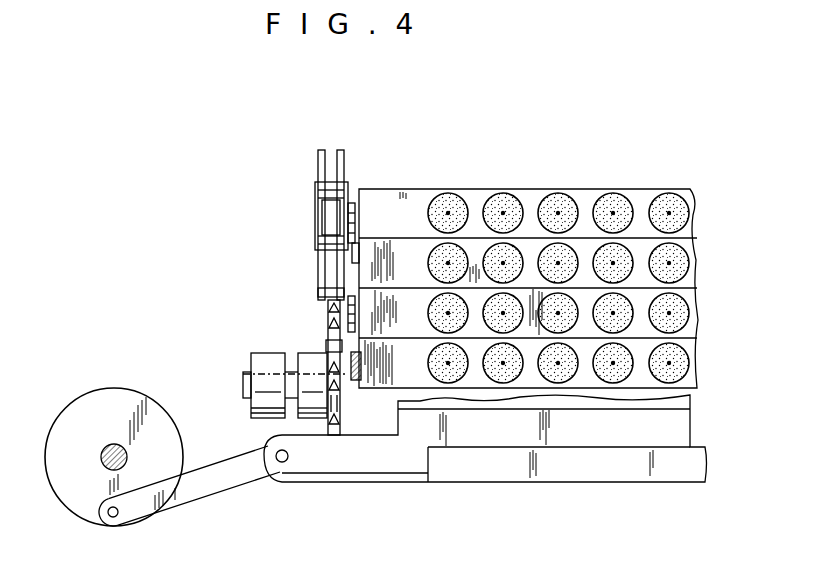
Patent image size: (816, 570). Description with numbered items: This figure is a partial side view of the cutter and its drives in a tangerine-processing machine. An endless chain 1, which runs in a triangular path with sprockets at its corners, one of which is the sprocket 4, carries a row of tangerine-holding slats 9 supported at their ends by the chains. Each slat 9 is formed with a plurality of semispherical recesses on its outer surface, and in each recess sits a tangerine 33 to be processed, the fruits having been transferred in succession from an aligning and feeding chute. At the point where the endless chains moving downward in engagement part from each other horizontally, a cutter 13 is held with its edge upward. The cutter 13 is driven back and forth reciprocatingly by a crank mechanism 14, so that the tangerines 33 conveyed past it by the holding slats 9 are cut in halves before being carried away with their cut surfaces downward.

The endless chain 1 is at (313, 198).
The sprocket 4 is at (328, 350).
The tangerine-holding slat 9 is at (537, 197).
The tangerine 33 is at (619, 207).
The cutter 13 is at (397, 459).
The crank mechanism 14 is at (202, 490).